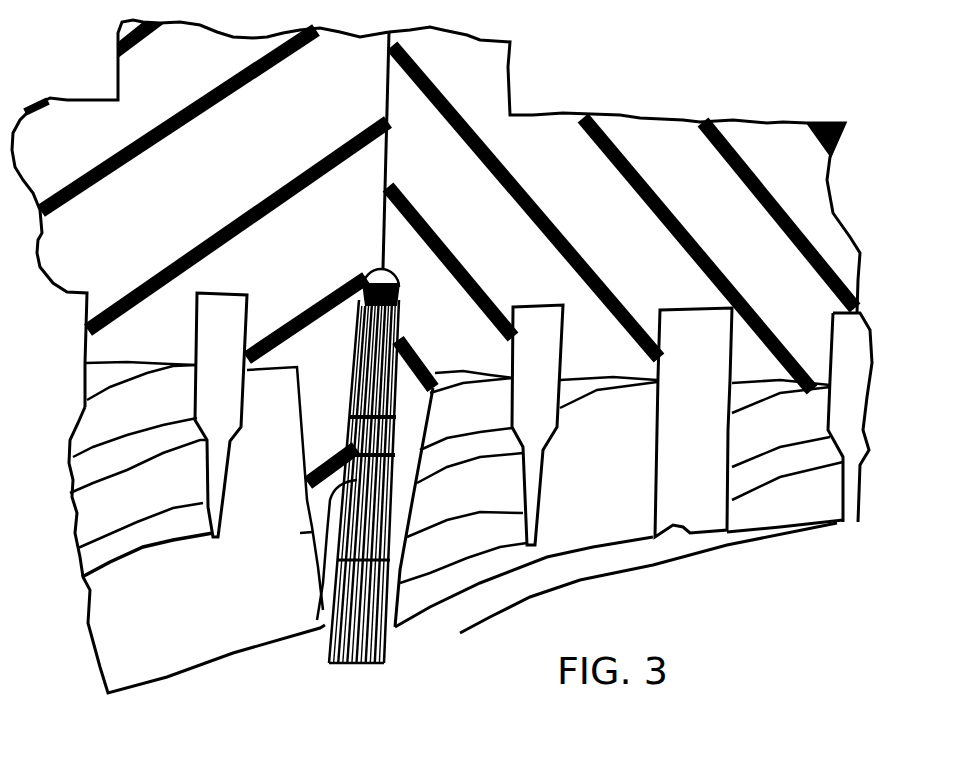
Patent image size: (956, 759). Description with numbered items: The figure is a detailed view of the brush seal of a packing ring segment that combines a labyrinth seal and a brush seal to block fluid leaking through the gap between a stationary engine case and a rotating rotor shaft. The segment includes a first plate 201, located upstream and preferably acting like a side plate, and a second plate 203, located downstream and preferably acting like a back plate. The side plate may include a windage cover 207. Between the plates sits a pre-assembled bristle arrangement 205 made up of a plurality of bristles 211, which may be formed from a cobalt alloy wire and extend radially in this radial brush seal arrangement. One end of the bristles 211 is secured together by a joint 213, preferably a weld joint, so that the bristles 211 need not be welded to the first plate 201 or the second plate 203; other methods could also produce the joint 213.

The first plate 201 is at (257, 156).
The second plate 203 is at (583, 180).
The pre-assembled bristle arrangement 205 is at (370, 512).
The windage cover 207 is at (317, 525).
The bristles 211 is at (372, 667).
The joint 213 is at (402, 297).